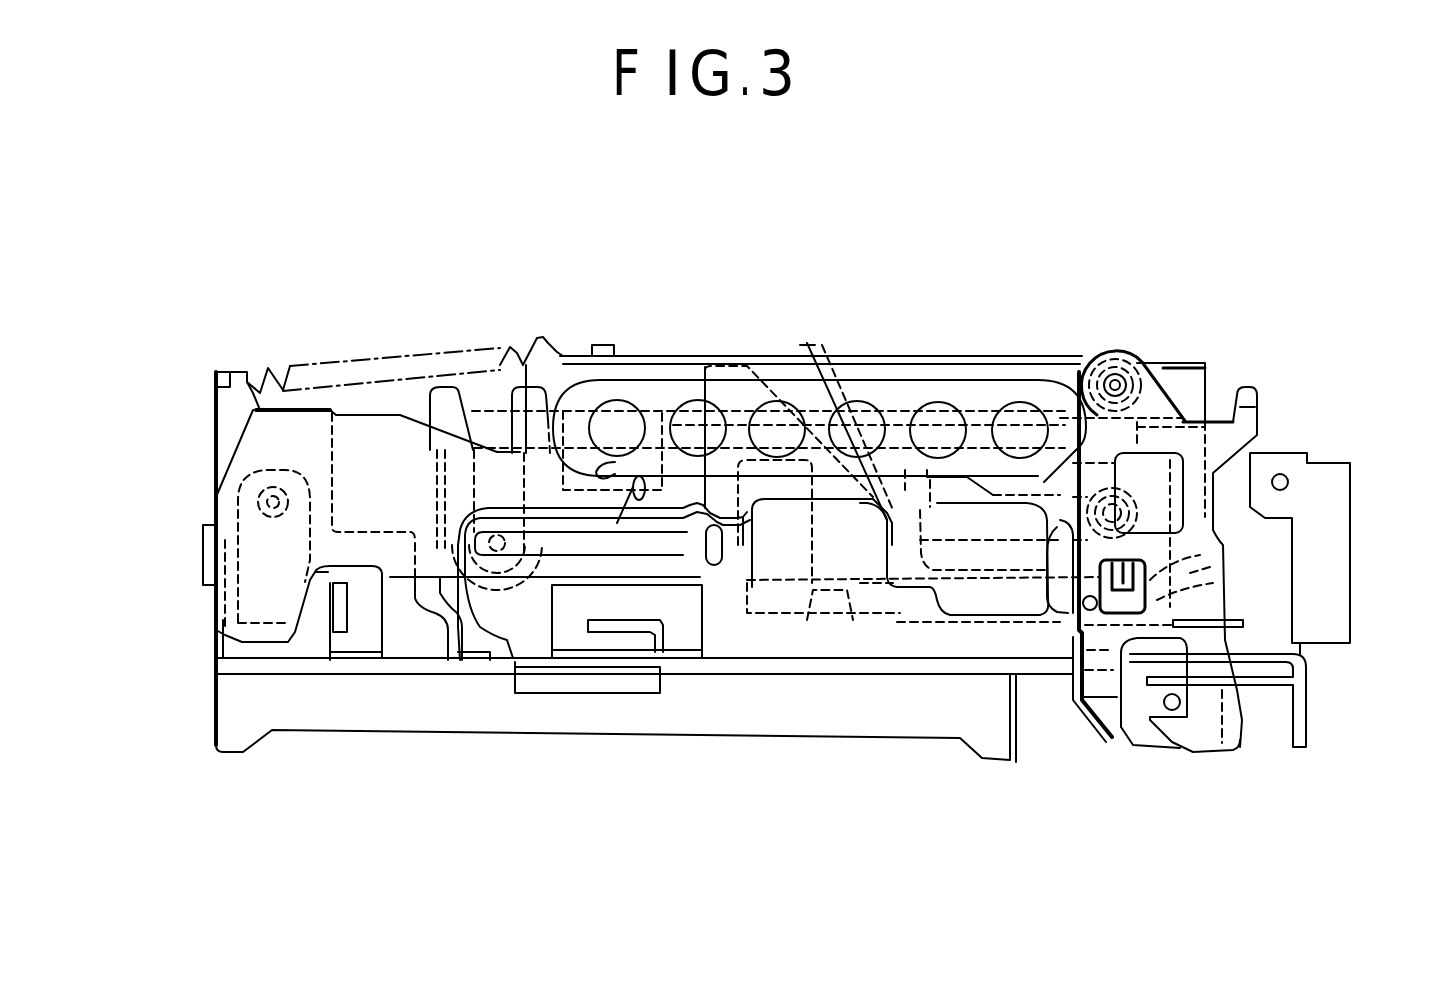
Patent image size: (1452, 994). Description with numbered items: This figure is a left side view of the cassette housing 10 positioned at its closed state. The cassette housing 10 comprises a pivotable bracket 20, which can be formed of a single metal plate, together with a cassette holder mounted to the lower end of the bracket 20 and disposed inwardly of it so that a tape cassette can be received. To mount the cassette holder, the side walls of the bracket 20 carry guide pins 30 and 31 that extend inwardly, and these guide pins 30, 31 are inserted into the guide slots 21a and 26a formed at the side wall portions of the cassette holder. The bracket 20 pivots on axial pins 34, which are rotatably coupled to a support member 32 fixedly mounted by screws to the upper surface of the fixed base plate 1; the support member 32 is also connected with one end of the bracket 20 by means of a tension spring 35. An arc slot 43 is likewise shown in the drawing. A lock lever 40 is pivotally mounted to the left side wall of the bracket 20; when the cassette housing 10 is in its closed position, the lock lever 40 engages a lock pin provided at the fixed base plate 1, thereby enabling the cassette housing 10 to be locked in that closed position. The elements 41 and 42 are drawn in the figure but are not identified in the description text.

The fixed base plate 1 is at (773, 674).
The cassette housing 10 is at (1221, 395).
The pivotable bracket 20 is at (745, 357).
The guide slot 21a is at (608, 478).
The guide slot 26a is at (1063, 622).
The guide pin 30 is at (447, 674).
The guide pin 31 is at (1107, 497).
The support member 32 is at (233, 648).
The axial pin 34 is at (258, 505).
The tension spring 35 is at (364, 363).
The lock lever 40 is at (1197, 550).
The pivot pin 41 is at (1112, 380).
The latch arm 42 is at (1153, 364).
The arc slot 43 is at (466, 415).